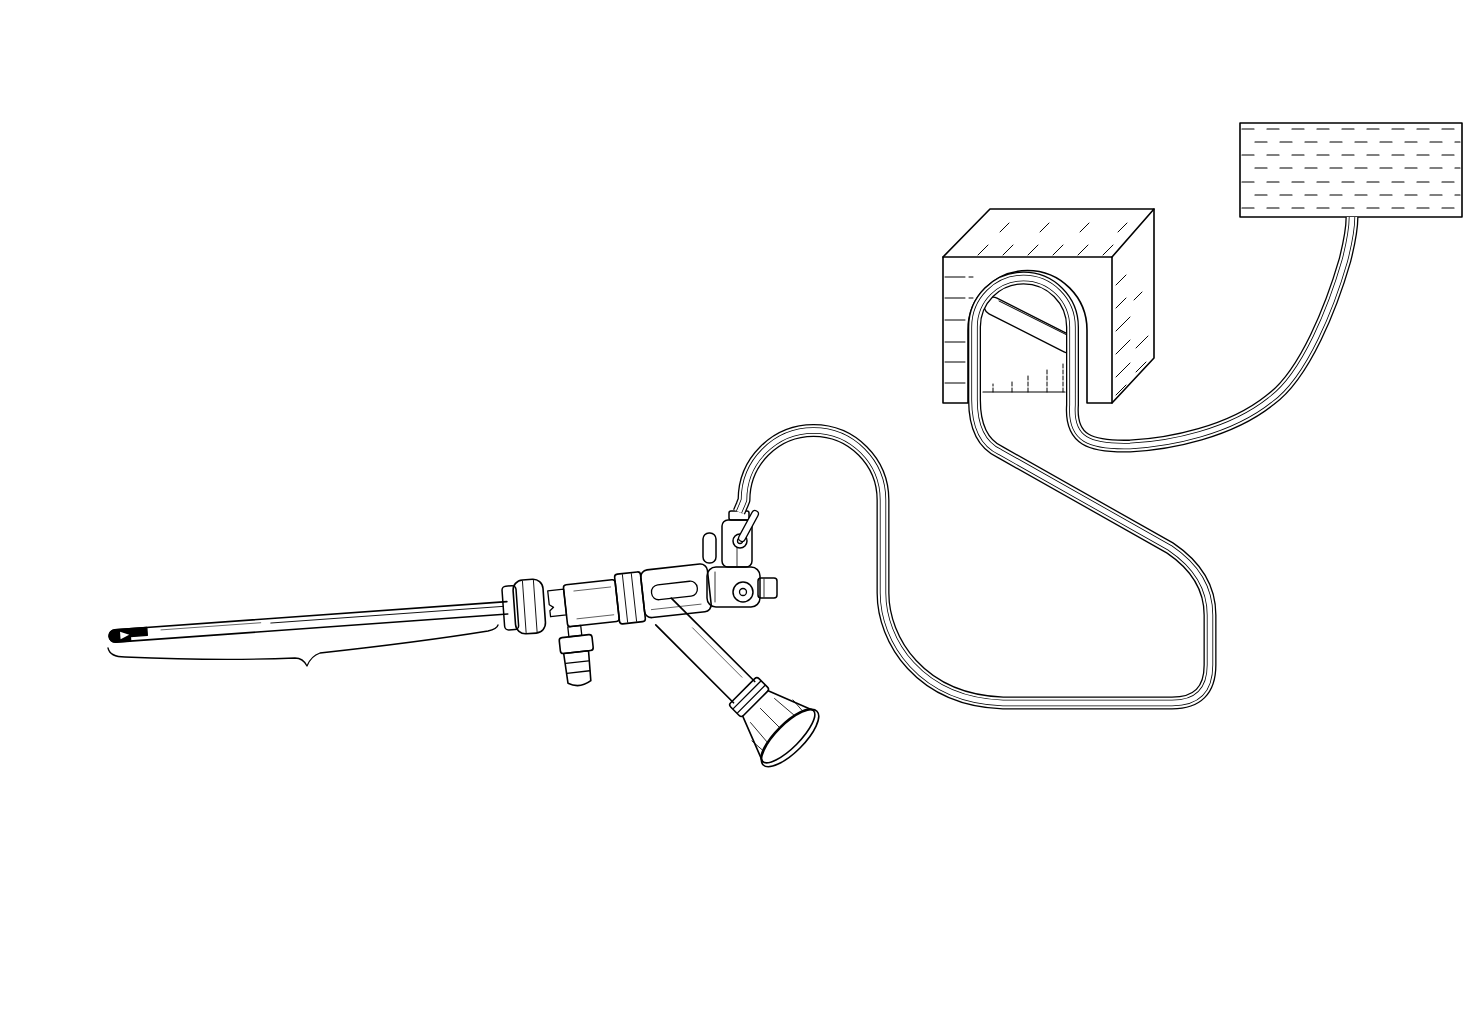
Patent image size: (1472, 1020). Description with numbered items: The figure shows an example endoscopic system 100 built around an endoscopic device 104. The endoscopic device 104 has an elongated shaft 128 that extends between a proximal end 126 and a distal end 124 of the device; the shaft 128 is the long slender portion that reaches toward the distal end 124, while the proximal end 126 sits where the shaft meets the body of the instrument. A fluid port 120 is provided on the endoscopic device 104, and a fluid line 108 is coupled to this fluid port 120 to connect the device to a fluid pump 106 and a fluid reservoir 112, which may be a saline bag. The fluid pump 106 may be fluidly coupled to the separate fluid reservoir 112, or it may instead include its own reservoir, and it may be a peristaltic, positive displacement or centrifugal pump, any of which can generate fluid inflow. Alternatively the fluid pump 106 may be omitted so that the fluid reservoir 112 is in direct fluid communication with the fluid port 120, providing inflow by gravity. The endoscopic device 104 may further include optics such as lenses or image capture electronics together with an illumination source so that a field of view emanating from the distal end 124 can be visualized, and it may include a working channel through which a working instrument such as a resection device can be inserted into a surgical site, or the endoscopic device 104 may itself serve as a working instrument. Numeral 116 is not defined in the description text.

The endoscopic system 100 is at (319, 314).
The endoscopic device 104 is at (584, 546).
The fluid pump 106 is at (1052, 218).
The fluid line 108 is at (1060, 700).
The fluid reservoir 112 is at (1392, 103).
The elongate shaft 116 is at (134, 617).
The fluid port 120 is at (719, 488).
The distal end 124 is at (108, 644).
The proximal end 126 is at (503, 624).
The elongated shaft 128 is at (304, 658).